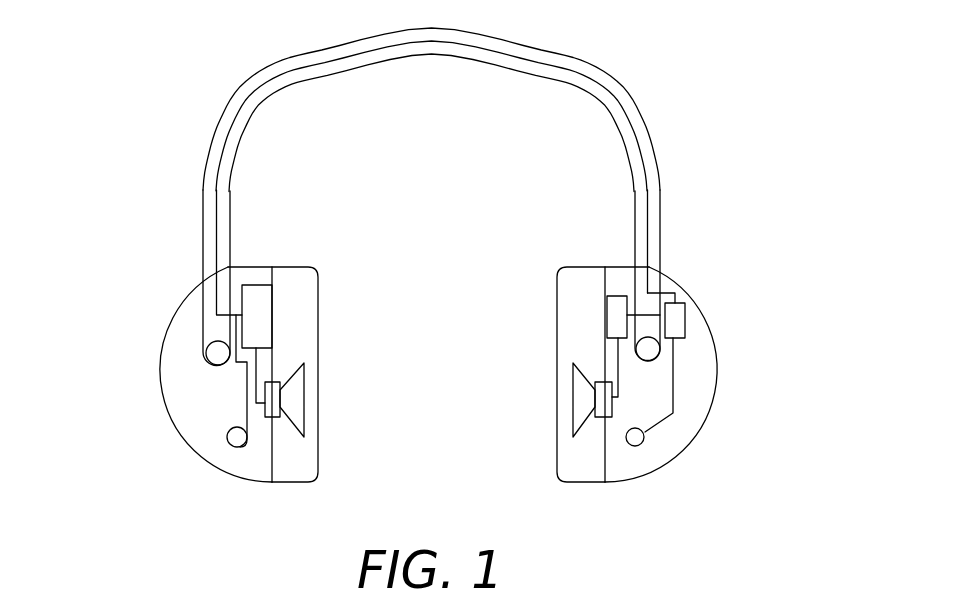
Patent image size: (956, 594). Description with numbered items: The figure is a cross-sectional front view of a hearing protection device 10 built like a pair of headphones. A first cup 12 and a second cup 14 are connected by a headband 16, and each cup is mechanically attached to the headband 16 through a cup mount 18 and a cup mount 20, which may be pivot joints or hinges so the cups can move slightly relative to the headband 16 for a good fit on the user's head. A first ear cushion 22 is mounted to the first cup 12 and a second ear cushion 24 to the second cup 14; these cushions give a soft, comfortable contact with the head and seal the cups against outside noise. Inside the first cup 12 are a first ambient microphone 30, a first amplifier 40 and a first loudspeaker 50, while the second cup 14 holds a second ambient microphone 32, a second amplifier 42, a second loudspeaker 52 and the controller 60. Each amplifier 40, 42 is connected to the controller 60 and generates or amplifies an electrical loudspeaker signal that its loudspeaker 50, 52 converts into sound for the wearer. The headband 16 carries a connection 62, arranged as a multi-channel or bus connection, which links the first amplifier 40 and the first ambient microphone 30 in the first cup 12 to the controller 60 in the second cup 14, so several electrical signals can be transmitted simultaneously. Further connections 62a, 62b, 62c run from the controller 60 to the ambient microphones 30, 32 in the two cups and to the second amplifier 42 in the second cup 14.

The hearing protection device 10 is at (762, 144).
The first cup 12 is at (177, 322).
The second cup 14 is at (699, 320).
The headband 16 is at (287, 67).
The cup mount 18 is at (206, 368).
The cup mount 20 is at (653, 360).
The first ear cushion 22 is at (288, 483).
The second ear cushion 24 is at (583, 483).
The first ambient microphone 30 is at (228, 447).
The second ambient microphone 32 is at (643, 445).
The first amplifier 40 is at (260, 287).
The second amplifier 42 is at (619, 296).
The first loudspeaker 50 is at (306, 398).
The second loudspeaker 52 is at (573, 400).
The controller 60 is at (678, 338).
The connection 62 is at (568, 75).
The connection 62a is at (247, 404).
The connection 62b is at (663, 424).
The connection 62c is at (648, 313).